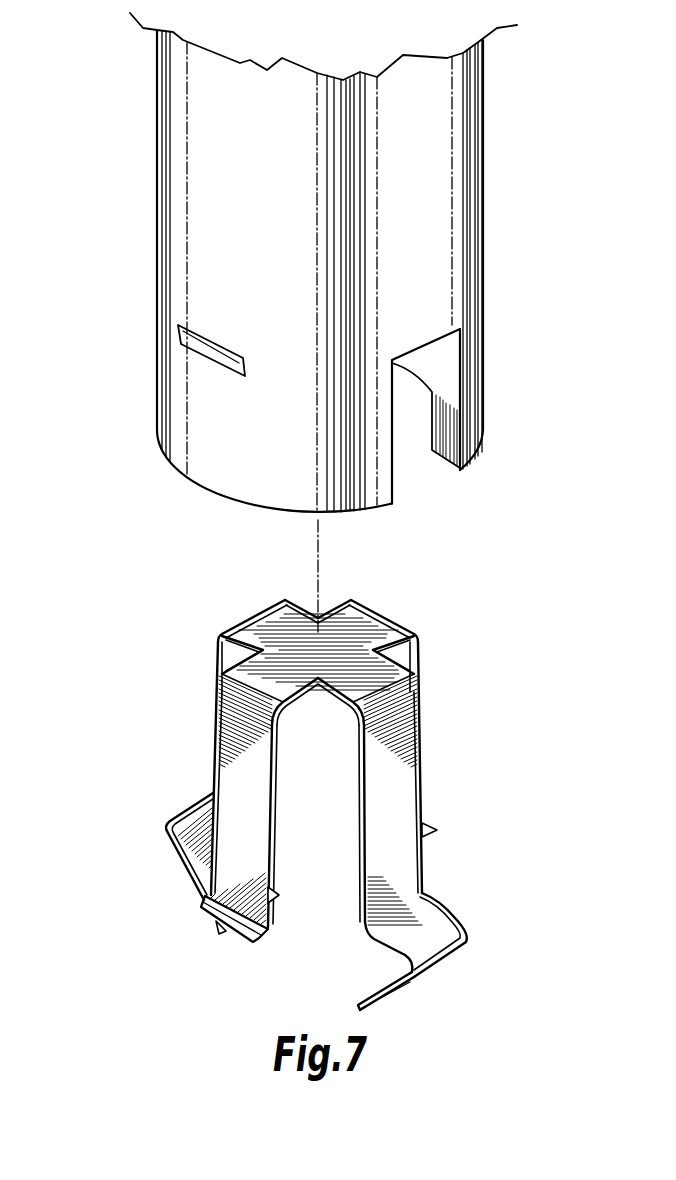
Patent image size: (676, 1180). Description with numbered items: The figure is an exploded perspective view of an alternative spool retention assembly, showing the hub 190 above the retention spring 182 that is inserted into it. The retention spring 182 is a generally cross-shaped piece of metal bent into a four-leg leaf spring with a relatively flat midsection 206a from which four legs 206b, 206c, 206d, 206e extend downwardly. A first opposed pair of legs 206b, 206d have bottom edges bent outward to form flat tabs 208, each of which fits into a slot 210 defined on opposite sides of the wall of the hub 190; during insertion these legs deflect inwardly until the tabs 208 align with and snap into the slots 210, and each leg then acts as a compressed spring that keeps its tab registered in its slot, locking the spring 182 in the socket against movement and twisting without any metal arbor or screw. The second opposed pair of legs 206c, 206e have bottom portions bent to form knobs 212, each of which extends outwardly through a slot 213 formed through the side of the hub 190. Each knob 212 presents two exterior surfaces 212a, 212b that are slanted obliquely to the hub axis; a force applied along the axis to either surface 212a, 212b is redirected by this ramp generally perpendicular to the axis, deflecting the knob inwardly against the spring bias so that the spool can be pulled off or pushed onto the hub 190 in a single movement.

The retention spring 182 is at (177, 700).
The hub 190 is at (445, 165).
The midsection 206a is at (338, 633).
The leg 206b is at (420, 654).
The leg 206c is at (410, 858).
The leg 206d is at (252, 808).
The leg 206e is at (215, 655).
The flat tab 208 is at (237, 937).
The slot 210 is at (190, 350).
The knob 212 is at (312, 898).
The exterior surface 212a is at (195, 818).
The exterior surface 212b is at (195, 870).
The slot 213 is at (426, 466).